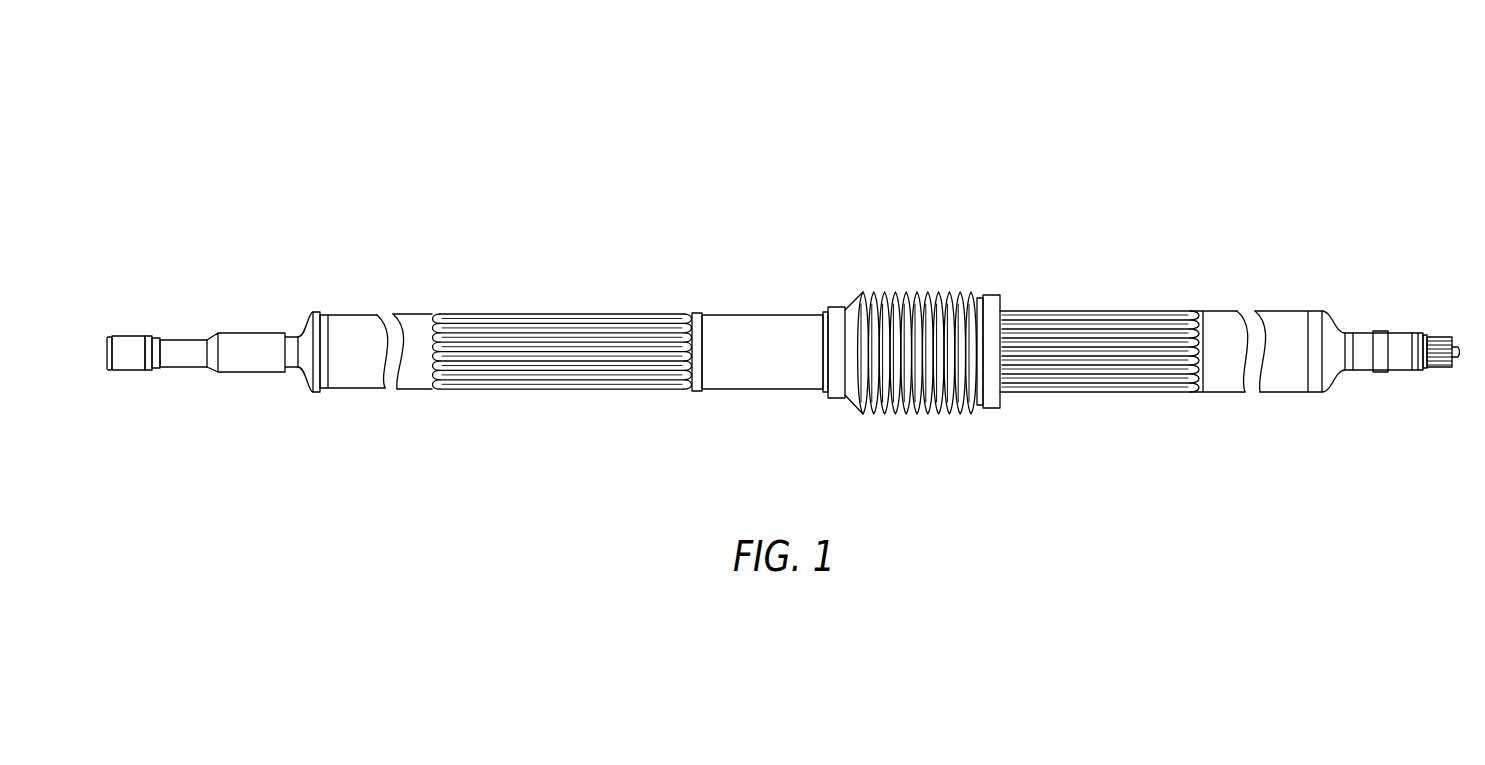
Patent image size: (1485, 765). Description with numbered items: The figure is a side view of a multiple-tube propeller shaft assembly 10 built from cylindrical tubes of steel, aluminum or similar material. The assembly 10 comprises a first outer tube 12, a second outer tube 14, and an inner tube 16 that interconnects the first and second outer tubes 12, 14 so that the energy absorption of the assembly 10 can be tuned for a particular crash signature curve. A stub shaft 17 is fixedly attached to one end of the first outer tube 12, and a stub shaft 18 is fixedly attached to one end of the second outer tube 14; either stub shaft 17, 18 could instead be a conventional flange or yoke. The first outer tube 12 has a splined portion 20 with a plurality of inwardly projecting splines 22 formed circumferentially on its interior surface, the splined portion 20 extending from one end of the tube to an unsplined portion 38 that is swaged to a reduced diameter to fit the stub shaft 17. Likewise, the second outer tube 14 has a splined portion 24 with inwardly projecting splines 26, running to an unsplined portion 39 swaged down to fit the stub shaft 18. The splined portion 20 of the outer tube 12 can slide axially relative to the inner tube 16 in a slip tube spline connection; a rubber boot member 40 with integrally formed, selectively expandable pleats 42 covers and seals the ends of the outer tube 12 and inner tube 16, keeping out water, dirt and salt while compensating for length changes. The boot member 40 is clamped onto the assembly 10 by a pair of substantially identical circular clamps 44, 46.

The multiple-tube propeller shaft assembly 10 is at (1248, 112).
The first outer tube 12 is at (1167, 257).
The second outer tube 14 is at (505, 276).
The inner tube 16 is at (773, 276).
The stub shaft 17 is at (1383, 316).
The stub shaft 18 is at (212, 313).
The splined portion 20 is at (1105, 301).
The inwardly projecting splines 22 is at (1027, 318).
The splined portion 24 is at (568, 304).
The inwardly projecting splines 26 is at (633, 320).
The unsplined portion 38 is at (1278, 307).
The unsplined portion 39 is at (353, 315).
The rubber boot member 40 is at (897, 282).
The selectively expandable pleats 42 is at (910, 297).
The circular clamp 44 is at (840, 307).
The circular clamp 46 is at (993, 290).